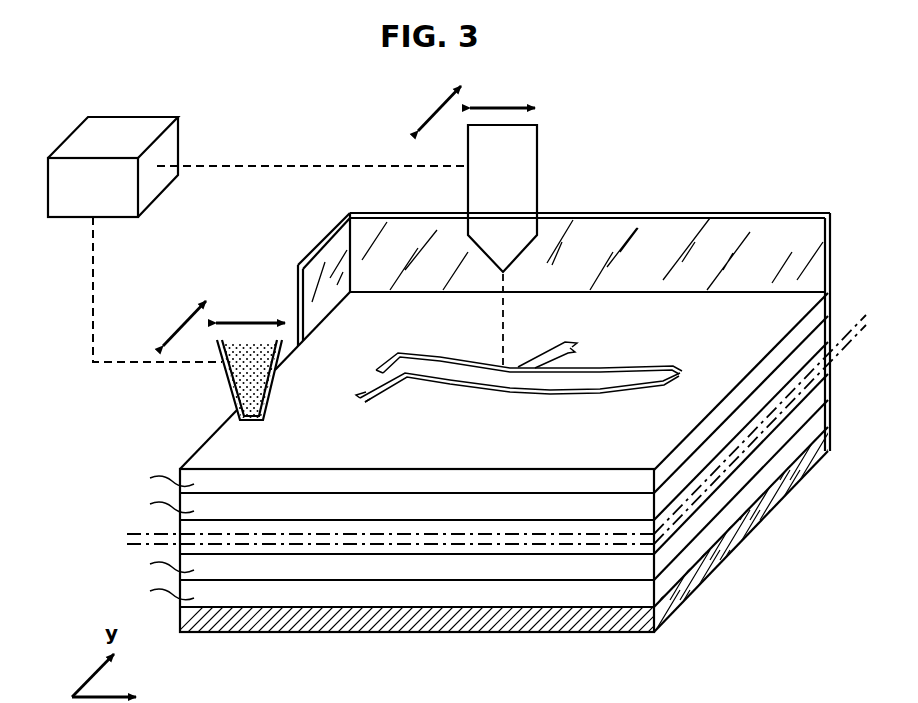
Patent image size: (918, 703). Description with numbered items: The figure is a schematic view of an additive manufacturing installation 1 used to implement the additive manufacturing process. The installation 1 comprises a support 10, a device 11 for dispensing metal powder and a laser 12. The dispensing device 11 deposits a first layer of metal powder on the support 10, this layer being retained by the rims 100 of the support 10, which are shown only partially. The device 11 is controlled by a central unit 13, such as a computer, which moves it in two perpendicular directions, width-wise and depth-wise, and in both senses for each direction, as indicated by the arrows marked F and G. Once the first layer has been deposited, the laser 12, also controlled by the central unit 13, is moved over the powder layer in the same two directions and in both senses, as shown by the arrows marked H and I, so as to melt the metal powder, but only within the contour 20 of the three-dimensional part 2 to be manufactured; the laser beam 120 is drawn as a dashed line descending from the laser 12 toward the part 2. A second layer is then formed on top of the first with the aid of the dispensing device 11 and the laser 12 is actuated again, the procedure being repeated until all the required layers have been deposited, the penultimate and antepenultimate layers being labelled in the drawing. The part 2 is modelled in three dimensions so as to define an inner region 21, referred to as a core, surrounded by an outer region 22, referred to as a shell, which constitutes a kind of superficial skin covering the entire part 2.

The additive manufacturing installation 1 is at (81, 435).
The three-dimensional part 2 is at (504, 404).
The support 10 is at (739, 527).
The dispensing device 11 is at (216, 393).
The laser 12 is at (507, 200).
The central unit 13 is at (107, 197).
The contour 20 is at (589, 392).
The inner region 21 is at (608, 375).
The outer region 22 is at (673, 367).
The rims 100 is at (658, 241).
The laser beam 120 is at (532, 299).